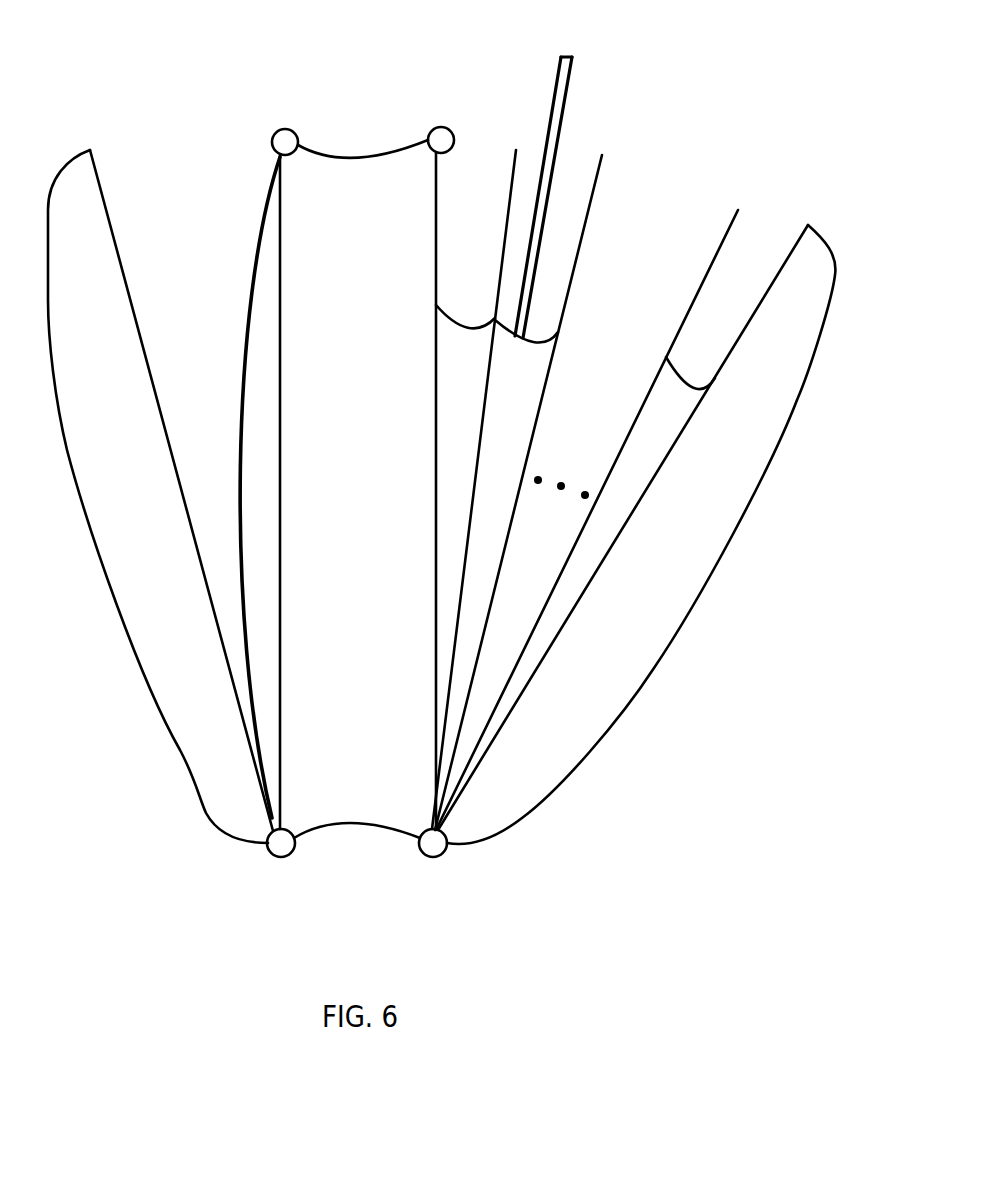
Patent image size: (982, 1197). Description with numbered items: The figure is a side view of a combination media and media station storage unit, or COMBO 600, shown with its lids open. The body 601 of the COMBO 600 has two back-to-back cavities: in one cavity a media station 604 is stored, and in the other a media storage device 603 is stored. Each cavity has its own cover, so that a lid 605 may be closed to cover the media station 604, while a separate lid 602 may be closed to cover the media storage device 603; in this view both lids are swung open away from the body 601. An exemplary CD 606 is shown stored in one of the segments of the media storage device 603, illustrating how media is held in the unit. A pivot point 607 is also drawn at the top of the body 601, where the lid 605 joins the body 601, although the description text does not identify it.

The tissue penetrating device / expandable anchor assembly 600 is at (472, 457).
The central frame member 601 is at (353, 150).
The outer petal / arm 602 is at (810, 273).
The intermediate arm 603 is at (593, 203).
The curved strut 604 is at (247, 255).
The left petal / arm 605 is at (85, 173).
The rod / pin 606 is at (569, 98).
The pivot joint 607 is at (279, 130).